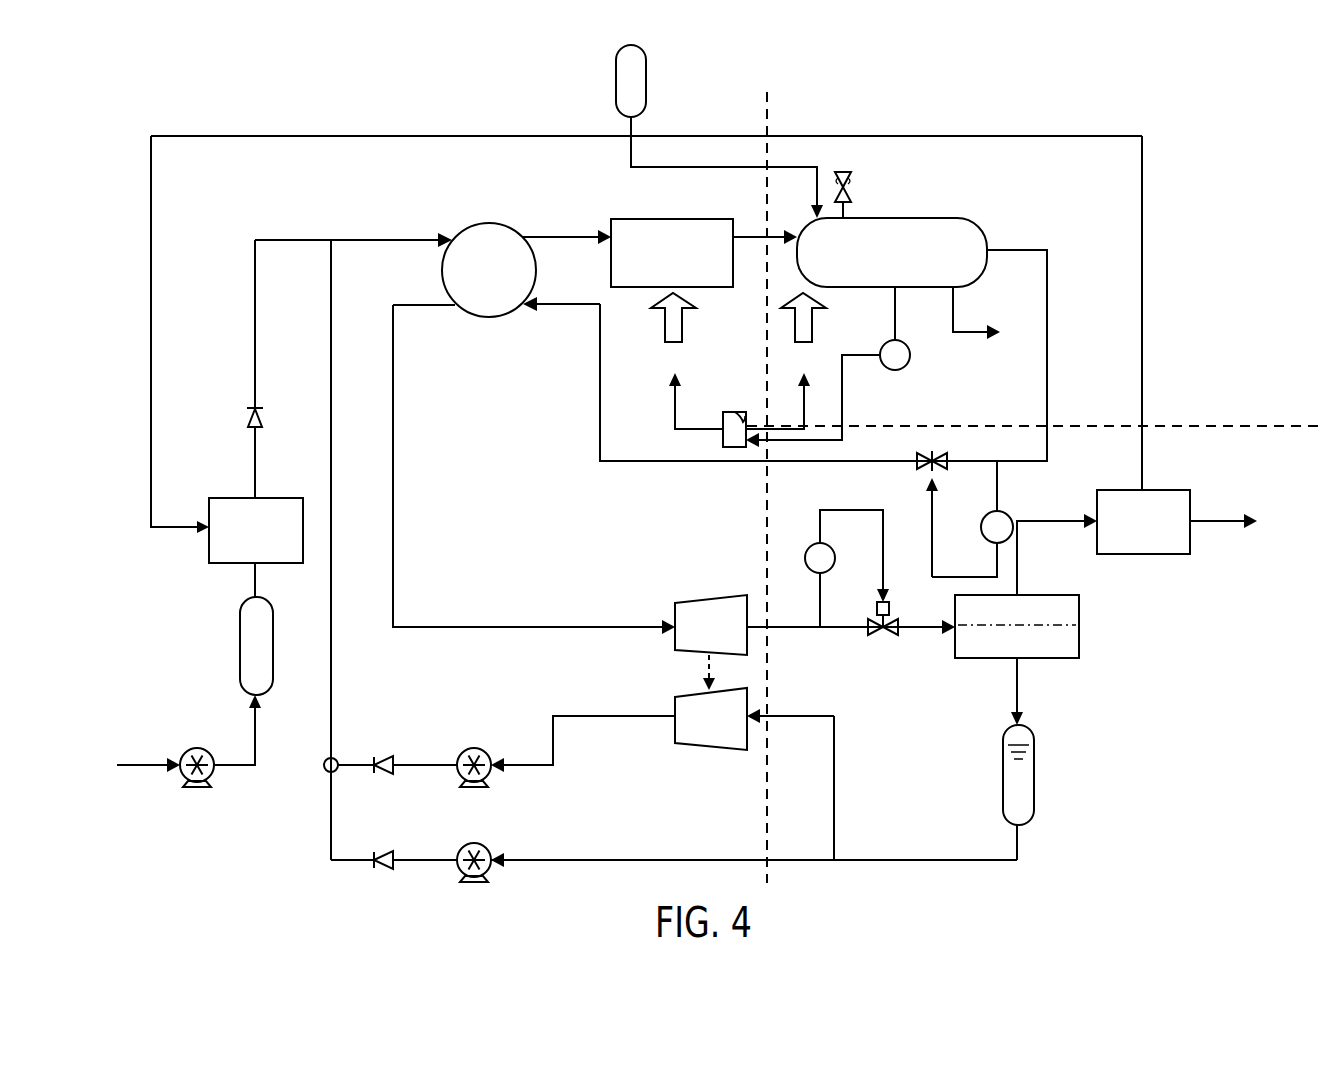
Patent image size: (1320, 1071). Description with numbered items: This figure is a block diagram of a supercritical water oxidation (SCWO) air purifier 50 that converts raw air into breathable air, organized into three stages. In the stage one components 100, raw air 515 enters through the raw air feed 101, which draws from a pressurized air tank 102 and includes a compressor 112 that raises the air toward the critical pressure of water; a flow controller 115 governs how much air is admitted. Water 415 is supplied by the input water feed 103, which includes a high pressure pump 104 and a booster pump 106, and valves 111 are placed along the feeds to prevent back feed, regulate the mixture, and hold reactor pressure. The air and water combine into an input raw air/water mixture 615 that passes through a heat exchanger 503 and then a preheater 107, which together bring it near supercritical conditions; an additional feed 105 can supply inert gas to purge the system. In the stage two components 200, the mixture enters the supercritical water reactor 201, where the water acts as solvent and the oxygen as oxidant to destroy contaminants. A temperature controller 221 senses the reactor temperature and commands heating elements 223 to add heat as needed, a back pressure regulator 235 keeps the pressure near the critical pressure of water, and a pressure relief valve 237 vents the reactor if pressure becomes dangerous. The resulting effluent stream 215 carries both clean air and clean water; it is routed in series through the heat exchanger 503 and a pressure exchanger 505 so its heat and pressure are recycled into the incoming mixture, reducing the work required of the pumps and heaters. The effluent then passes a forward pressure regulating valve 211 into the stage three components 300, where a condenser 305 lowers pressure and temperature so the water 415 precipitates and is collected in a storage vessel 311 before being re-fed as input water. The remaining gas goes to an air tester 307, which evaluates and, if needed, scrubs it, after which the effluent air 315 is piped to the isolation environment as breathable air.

The SCWO air purifier 50 is at (937, 98).
The stage one components 100 is at (486, 106).
The stage two components 200 is at (1083, 106).
The stage three components 300 is at (1191, 678).
The additional feed 105 is at (616, 87).
The preheater 107 is at (622, 219).
The pressure relief valve 237 is at (850, 180).
The supercritical water reactor 201 is at (875, 218).
The temperature controller 221 is at (905, 343).
The effluent stream 215 is at (1047, 340).
The heating elements 223 is at (731, 447).
The back pressure regulator 235 is at (925, 471).
The forward pressure regulating valve 211 is at (891, 612).
The condenser 305 is at (1079, 620).
The air tester 307 is at (1150, 554).
The effluent air 315 is at (1207, 516).
The storage vessel 311 is at (1034, 735).
The pressure exchanger 505 is at (710, 597).
The heat exchanger 503 is at (493, 224).
The input raw air/water mixture 615 is at (360, 240).
The valves 111 is at (248, 418).
The flow controller 115 is at (232, 498).
The raw air feed 101 is at (208, 600).
The pressurized air tank 102 is at (273, 650).
The compressor 112 is at (200, 748).
The raw air 515 is at (128, 768).
The booster pump 106 is at (485, 750).
The input water feed 103 is at (512, 822).
The high pressure pump 104 is at (491, 870).
The water 415 is at (621, 862).